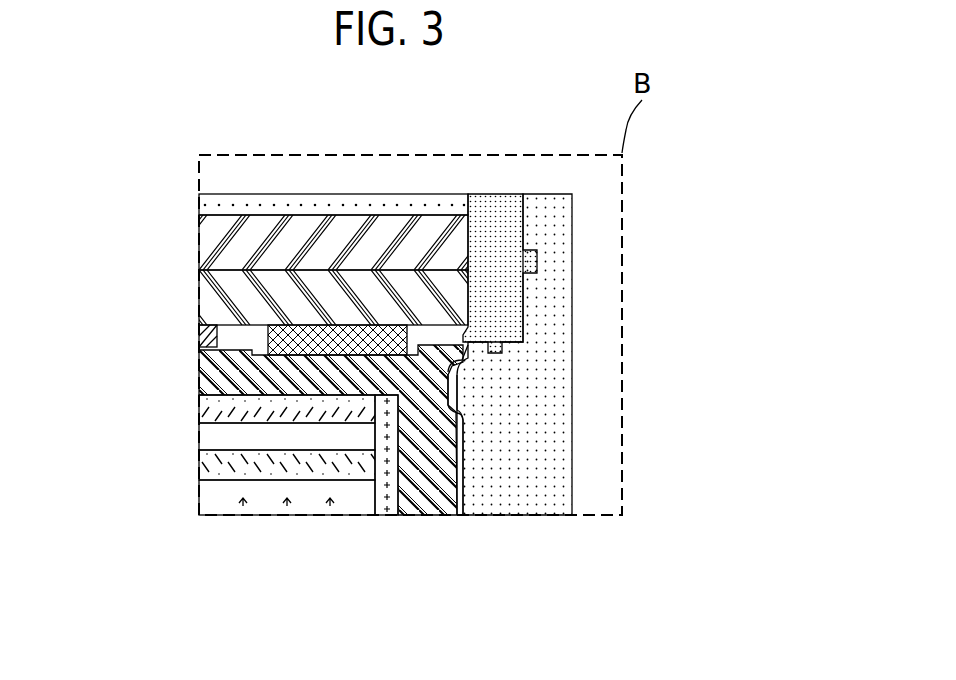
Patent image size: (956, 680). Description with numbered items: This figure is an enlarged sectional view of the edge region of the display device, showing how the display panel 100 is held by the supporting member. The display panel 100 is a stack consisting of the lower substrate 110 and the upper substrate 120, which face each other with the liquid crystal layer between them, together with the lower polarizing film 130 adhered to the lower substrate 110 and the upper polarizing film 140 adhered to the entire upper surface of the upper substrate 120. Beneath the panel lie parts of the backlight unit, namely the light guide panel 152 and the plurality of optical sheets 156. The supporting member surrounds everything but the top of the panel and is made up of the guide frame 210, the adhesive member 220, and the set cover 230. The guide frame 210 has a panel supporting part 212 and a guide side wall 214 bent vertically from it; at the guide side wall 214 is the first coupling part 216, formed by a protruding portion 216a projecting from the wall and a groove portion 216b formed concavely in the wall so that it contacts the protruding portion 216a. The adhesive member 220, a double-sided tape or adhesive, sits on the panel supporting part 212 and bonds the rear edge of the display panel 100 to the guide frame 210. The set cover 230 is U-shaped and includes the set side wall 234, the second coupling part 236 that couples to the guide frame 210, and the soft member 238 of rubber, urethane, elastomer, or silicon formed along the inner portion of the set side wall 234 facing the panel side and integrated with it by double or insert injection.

The display panel 100 is at (100, 200).
The lower substrate 110 is at (200, 294).
The upper substrate 120 is at (200, 246).
The lower polarizing film 130 is at (200, 336).
The upper polarizing film 140 is at (204, 206).
The light guide panel 152 is at (200, 500).
The optical sheets 156 is at (200, 465).
The guide frame 210 is at (480, 608).
The panel supporting part 212 is at (352, 377).
The guide side wall 214 is at (415, 497).
The first coupling part 216 is at (505, 572).
The protruding portion 216a is at (465, 417).
The groove portion 216b is at (448, 378).
The adhesive member 220 is at (290, 345).
The set cover 230 is at (715, 302).
The set side wall 234 is at (533, 446).
The second coupling part 236 is at (462, 360).
The soft member 238 is at (510, 313).